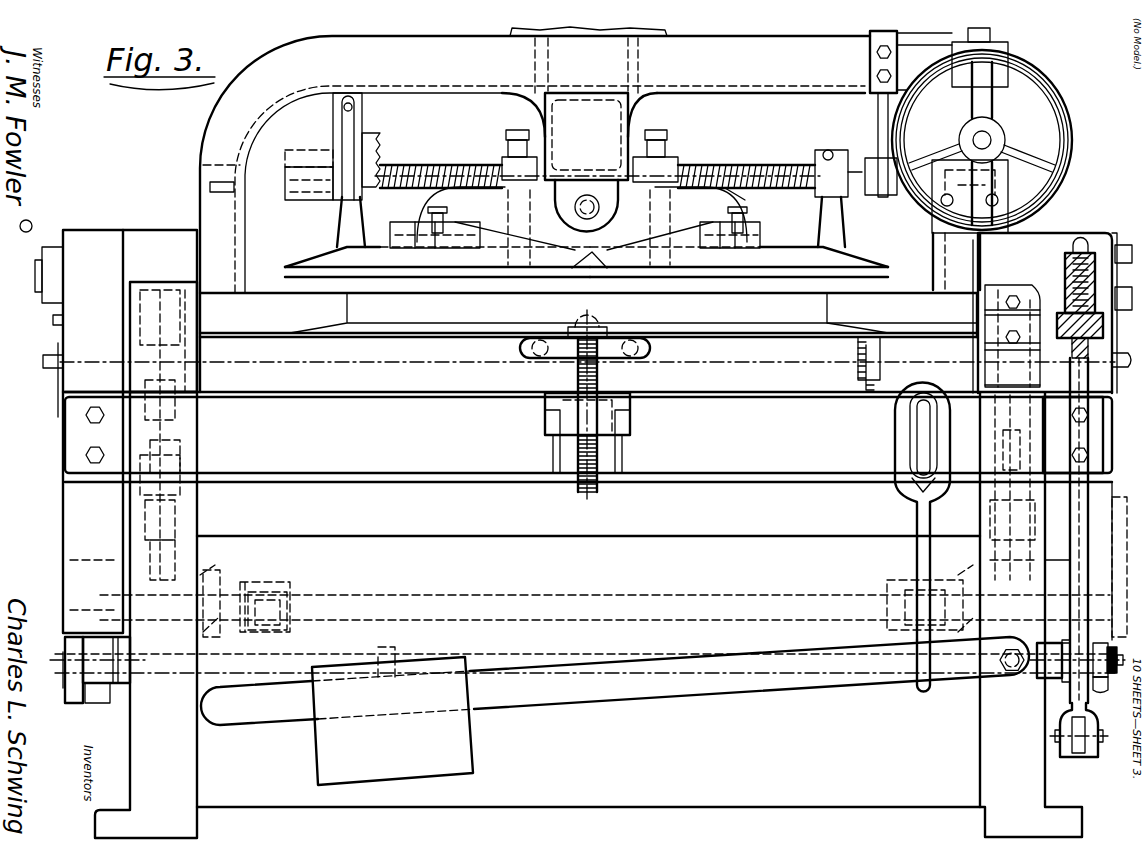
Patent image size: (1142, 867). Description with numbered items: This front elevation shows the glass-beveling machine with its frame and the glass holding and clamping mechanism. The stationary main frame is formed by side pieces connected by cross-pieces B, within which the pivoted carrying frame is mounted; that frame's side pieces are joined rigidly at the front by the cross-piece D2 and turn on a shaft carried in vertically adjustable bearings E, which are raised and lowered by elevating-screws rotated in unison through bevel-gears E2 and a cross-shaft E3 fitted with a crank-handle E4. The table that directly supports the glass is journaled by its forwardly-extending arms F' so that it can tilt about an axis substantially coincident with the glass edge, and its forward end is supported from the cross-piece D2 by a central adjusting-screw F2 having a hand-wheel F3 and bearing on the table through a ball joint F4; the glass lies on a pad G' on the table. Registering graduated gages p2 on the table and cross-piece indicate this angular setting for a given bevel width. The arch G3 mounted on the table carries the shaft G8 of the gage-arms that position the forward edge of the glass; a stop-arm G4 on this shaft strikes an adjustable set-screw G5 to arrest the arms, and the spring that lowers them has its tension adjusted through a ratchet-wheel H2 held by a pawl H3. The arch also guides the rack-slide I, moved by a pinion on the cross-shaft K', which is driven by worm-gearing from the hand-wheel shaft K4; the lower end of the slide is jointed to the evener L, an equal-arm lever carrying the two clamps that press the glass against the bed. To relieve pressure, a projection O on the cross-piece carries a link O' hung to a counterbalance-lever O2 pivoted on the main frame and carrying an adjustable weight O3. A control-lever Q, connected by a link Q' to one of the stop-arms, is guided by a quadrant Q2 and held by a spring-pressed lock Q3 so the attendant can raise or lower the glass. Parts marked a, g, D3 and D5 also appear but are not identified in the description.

The arch G3 is at (215, 145).
The adjustable stop or set-screw G5 is at (670, 60).
The stop-arm G4 is at (345, 147).
The shaft G8 is at (855, 165).
The pad G' is at (836, 313).
The pin a is at (855, 166).
The nut g is at (97, 693).
The cross-shaft K' is at (597, 166).
The shaft K4 is at (987, 140).
The ratchet-wheel H2 is at (340, 186).
The pawl H3 is at (372, 135).
The clamp-support or slide I is at (579, 136).
The evener L is at (596, 206).
The forwardly-extending arms F' is at (588, 315).
The adjusting-screw F2 is at (590, 378).
The hand-wheel F3 is at (545, 350).
The spherical or ball joint F4 is at (600, 330).
The cross-piece D2 is at (587, 422).
The right bearing block D3 is at (1112, 662).
The left column D5 is at (64, 512).
The cross-pieces B is at (905, 790).
The vertically-adjustable bearings E is at (585, 610).
The bevel-gears E2 is at (215, 578).
The cross-shaft E3 is at (352, 596).
The crank-handle E4 is at (1118, 568).
The projection O is at (895, 511).
The link O' is at (898, 590).
The counterbalance-lever O2 is at (852, 690).
The adjustable weight O3 is at (392, 716).
The graduated gages p2 is at (882, 356).
The control-lever Q is at (1098, 530).
The link Q' is at (1079, 748).
The quadrant Q2 is at (1103, 322).
The spring-pressed pawl or lock Q3 is at (1060, 333).